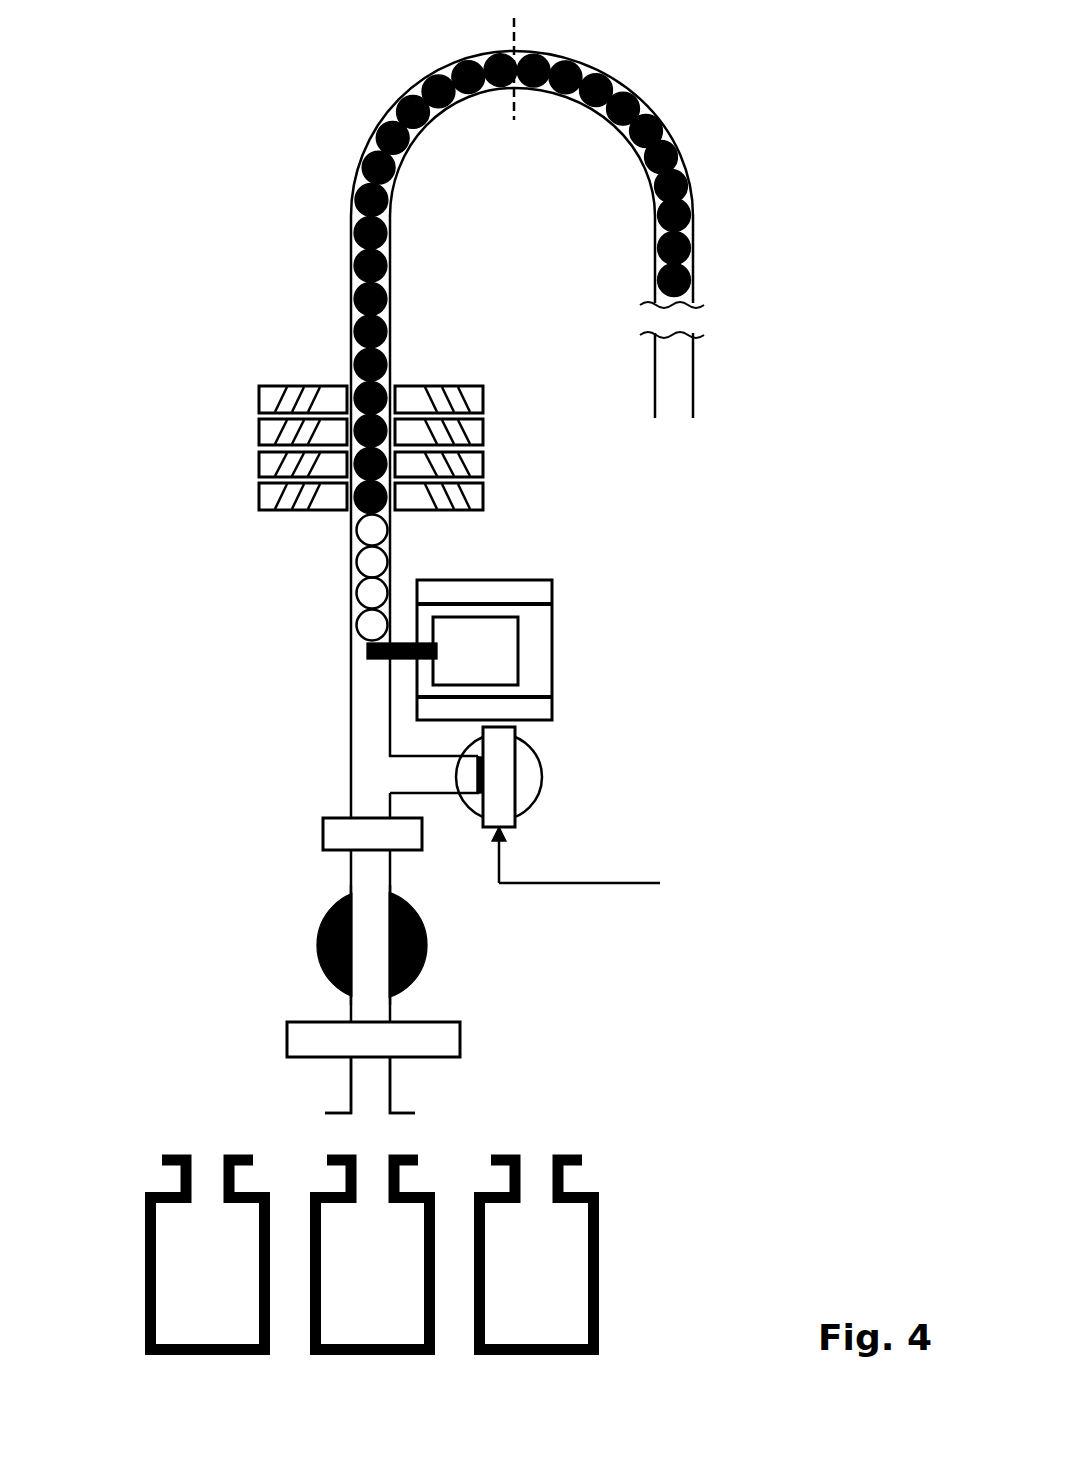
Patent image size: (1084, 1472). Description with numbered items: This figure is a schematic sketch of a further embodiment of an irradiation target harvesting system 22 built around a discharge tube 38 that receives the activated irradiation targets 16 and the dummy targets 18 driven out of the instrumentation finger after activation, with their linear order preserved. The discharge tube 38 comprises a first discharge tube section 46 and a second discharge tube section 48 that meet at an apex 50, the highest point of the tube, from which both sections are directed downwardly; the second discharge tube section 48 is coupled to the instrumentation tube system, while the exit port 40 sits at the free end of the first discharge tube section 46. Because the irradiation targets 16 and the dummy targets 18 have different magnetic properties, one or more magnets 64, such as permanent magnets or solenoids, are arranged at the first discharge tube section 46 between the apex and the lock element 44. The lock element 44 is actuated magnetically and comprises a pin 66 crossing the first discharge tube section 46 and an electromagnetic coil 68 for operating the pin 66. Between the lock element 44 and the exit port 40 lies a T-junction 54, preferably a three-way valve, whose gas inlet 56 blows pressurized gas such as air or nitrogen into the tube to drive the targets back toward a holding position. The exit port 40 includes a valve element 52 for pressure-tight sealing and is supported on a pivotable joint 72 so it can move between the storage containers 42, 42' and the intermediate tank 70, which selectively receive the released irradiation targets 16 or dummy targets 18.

The irradiation targets 16 is at (372, 562).
The dummy targets 18 is at (348, 332).
The irradiation target harvesting system 22 is at (343, 100).
The discharge tube 38 is at (716, 112).
The exit port 40 is at (365, 1095).
The storage container 42 is at (403, 1276).
The storage container 42' is at (180, 1279).
The lock element 44 is at (528, 621).
The first discharge tube section 46 is at (348, 255).
The second discharge tube section 48 is at (690, 235).
The apex 50 is at (516, 45).
The valve element 52 is at (367, 1043).
The T-junction 54 is at (523, 762).
The gas inlet 56 is at (497, 802).
The magnets 64 is at (268, 398).
The pin 66 is at (365, 662).
The electromagnetic coil 68 is at (505, 672).
The intermediate tank 70 is at (570, 1302).
The pivotable joint 72 is at (423, 933).